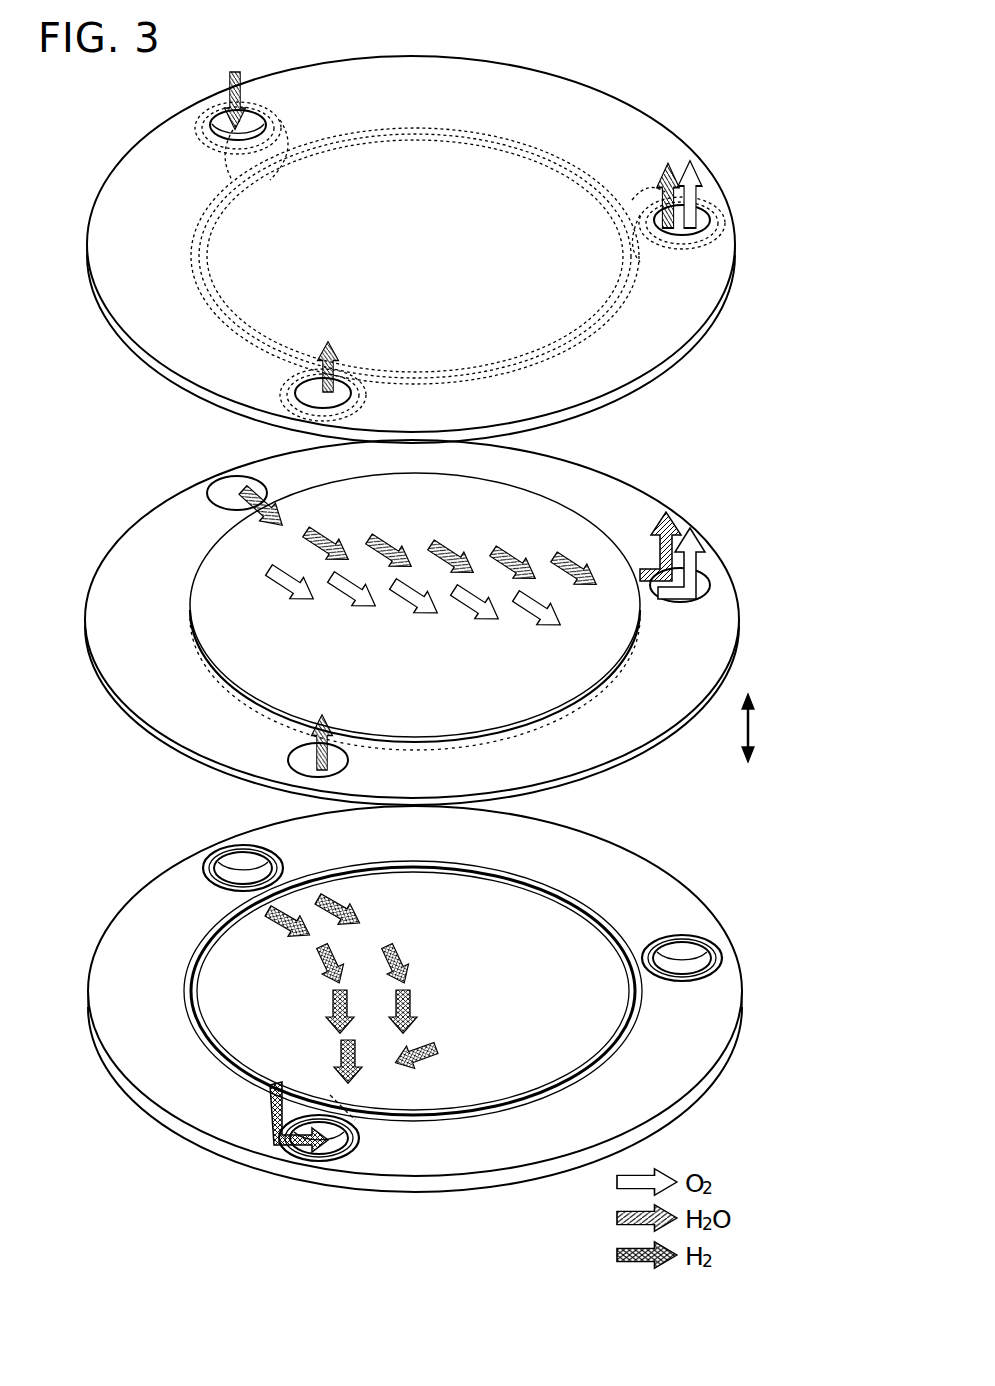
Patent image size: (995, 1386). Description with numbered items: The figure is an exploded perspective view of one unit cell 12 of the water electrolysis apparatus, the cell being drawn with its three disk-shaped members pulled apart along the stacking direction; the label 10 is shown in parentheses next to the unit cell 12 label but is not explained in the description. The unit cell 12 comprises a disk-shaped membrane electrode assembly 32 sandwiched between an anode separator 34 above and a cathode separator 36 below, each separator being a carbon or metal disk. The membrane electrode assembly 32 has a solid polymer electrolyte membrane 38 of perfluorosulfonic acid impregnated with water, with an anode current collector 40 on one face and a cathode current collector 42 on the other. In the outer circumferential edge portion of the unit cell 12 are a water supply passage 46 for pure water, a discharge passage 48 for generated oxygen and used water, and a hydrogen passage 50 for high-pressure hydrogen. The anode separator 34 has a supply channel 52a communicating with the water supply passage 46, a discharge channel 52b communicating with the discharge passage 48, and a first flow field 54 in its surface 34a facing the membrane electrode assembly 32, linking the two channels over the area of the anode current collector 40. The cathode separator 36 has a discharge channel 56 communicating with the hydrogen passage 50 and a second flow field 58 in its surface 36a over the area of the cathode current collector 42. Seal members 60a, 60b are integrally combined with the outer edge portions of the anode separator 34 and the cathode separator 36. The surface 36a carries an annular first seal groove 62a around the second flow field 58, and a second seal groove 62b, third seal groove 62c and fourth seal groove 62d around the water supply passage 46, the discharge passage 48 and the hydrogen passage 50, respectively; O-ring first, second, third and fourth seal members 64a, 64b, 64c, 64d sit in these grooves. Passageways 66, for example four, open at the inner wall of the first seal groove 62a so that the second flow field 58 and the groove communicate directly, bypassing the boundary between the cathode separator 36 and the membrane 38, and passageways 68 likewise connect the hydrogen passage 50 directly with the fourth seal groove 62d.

The fuel cell 10 is at (118, 103).
The unit cell 12 is at (70, 103).
The membrane electrode assembly 32 is at (672, 500).
The anode separator 34 is at (582, 75).
The surface of the anode separator 34a is at (447, 78).
The cathode separator 36 is at (660, 862).
The surface of the cathode separator 36a is at (575, 842).
The solid polymer electrolyte membrane 38 is at (125, 673).
The anode current collector 40 is at (205, 578).
The cathode current collector 42 is at (565, 660).
The water supply passage 46 is at (255, 118).
The discharge passage 48 is at (690, 222).
The hydrogen passage 50 is at (318, 382).
The supply channel 52a is at (200, 200).
The discharge channel 52b is at (632, 205).
The first flow field 54 is at (262, 292).
The discharge channel 56 is at (328, 1092).
The second flow field 58 is at (568, 1038).
The seal member 60a is at (153, 332).
The seal member 60b is at (190, 1118).
The first seal groove 62a is at (525, 1095).
The second seal groove 62b is at (195, 842).
The third seal groove 62c is at (680, 922).
The fourth seal groove 62d is at (282, 1163).
The first seal member 64a is at (566, 1030).
The second seal member 64b is at (250, 845).
The third seal member 64c is at (712, 945).
The fourth seal member 64d is at (282, 1145).
The passageways 66 is at (395, 868).
The passageways 68 is at (350, 1128).